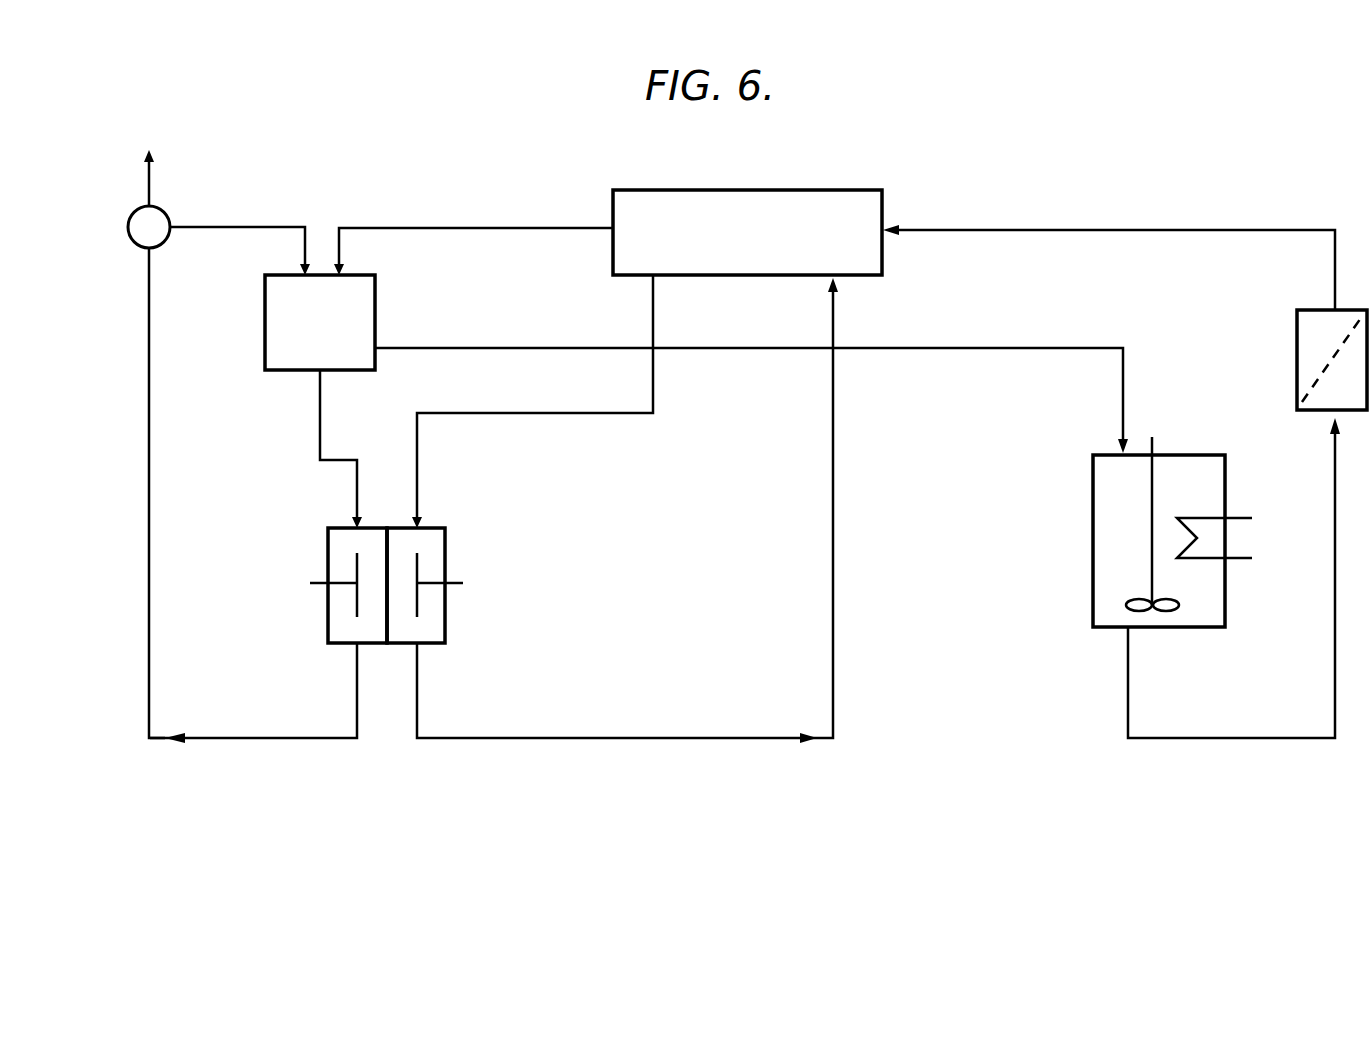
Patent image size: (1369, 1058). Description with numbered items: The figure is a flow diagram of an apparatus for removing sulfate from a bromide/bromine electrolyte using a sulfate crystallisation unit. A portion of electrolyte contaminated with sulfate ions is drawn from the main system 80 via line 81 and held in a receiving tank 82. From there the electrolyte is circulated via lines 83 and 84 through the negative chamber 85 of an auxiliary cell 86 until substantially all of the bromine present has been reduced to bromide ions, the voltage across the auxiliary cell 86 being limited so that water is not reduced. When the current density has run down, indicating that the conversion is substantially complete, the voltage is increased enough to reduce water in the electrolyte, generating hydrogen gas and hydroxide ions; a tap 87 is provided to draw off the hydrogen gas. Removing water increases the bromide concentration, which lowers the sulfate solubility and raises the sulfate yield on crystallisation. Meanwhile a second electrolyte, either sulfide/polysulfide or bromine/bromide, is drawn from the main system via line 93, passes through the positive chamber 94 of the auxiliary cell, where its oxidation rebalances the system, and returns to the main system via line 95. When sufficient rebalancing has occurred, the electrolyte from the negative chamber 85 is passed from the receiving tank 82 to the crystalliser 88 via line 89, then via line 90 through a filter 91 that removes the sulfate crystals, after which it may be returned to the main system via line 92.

The main system 80 is at (785, 190).
The line 81 is at (477, 227).
The receiving tank 82 is at (265, 307).
The line 83 is at (320, 408).
The line 84 is at (148, 486).
The negative chamber 85 is at (340, 540).
The auxiliary cell 86 is at (432, 525).
The tap 87 is at (132, 241).
The crystalliser 88 is at (1093, 472).
The line 89 is at (947, 348).
The line 90 is at (1218, 740).
The filter 91 is at (1297, 366).
The line 92 is at (1130, 230).
The line 93 is at (487, 413).
The positive chamber 94 is at (430, 632).
The line 95 is at (548, 740).